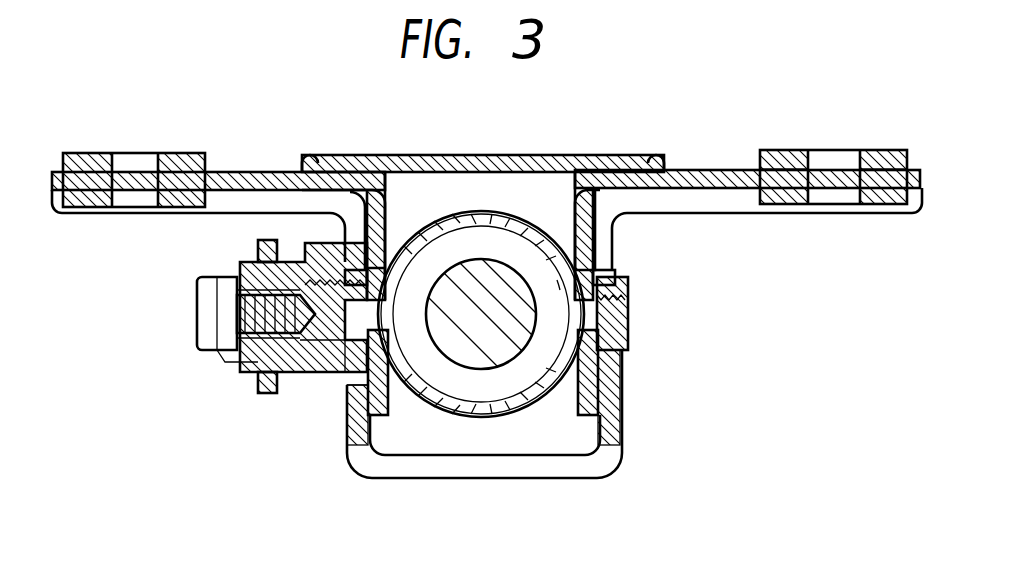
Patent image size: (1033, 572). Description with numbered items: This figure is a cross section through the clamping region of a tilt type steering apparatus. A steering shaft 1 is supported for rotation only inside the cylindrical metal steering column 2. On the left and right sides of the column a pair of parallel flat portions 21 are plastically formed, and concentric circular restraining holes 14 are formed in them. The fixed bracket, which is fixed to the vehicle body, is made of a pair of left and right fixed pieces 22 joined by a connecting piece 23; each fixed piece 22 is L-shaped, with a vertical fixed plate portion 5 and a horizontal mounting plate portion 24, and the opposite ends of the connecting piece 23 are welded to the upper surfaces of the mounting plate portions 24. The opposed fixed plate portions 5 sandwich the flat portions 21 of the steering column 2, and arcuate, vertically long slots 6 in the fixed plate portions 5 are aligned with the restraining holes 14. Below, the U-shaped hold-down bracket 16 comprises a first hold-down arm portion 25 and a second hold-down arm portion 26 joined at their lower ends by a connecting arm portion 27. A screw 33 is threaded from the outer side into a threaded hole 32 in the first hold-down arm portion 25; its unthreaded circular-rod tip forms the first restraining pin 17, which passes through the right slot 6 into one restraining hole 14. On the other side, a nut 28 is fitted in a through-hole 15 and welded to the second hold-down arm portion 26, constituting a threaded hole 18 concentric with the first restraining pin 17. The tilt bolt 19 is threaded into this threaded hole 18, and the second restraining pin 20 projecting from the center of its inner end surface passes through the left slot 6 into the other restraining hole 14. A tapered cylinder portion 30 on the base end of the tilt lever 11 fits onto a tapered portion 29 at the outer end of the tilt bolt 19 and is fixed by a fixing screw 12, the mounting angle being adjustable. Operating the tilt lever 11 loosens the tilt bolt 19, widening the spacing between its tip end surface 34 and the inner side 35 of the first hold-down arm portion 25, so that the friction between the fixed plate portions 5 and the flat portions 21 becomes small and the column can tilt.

The steering shaft 1 is at (527, 395).
The steering column 2 is at (497, 212).
The fixed plate portions 5 is at (280, 192).
The slots 6 is at (383, 388).
The tilt lever 11 is at (265, 385).
The fixing screw 12 is at (205, 318).
The restraining holes 14 is at (412, 340).
The through-hole 15 is at (322, 262).
The hold-down bracket 16 is at (420, 470).
The first restraining pin 17 is at (558, 317).
The threaded hole 18 is at (297, 362).
The tilt bolt 19 is at (262, 300).
The second restraining pin 20 is at (400, 310).
The flat portions 21 is at (350, 420).
The fixed pieces 22 is at (202, 118).
The connecting piece 23 is at (455, 160).
The mounting plate portions 24 is at (265, 172).
The first hold-down arm portion 25 is at (612, 377).
The second hold-down arm portion 26 is at (352, 440).
The connecting arm portion 27 is at (505, 470).
The nut 28 is at (320, 375).
The tapered portion 29 is at (227, 360).
The tapered cylinder portion 30 is at (257, 380).
The threaded hole 32 is at (627, 320).
The screw 33 is at (618, 308).
The tip end surface 34 is at (390, 263).
The inner side 35 is at (600, 270).